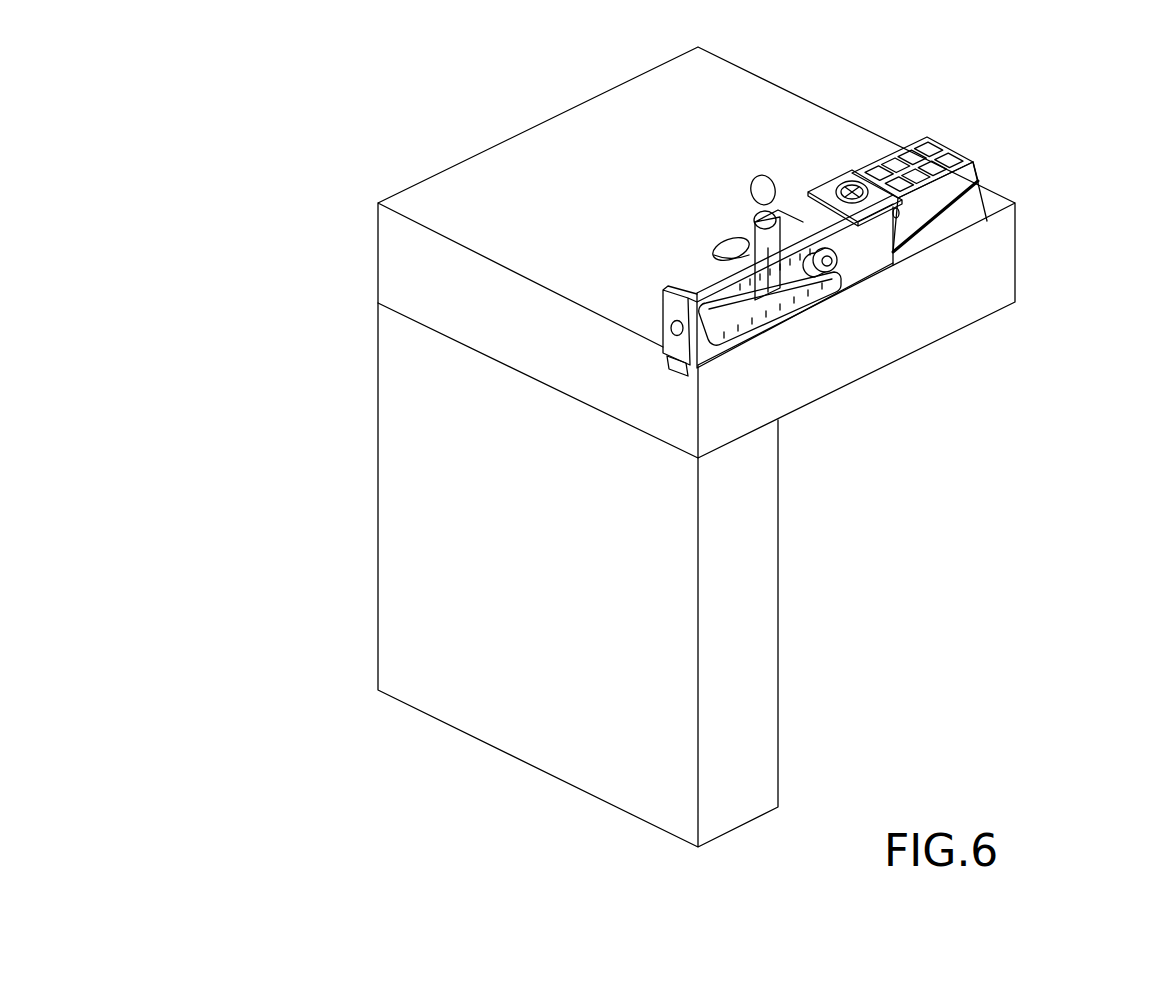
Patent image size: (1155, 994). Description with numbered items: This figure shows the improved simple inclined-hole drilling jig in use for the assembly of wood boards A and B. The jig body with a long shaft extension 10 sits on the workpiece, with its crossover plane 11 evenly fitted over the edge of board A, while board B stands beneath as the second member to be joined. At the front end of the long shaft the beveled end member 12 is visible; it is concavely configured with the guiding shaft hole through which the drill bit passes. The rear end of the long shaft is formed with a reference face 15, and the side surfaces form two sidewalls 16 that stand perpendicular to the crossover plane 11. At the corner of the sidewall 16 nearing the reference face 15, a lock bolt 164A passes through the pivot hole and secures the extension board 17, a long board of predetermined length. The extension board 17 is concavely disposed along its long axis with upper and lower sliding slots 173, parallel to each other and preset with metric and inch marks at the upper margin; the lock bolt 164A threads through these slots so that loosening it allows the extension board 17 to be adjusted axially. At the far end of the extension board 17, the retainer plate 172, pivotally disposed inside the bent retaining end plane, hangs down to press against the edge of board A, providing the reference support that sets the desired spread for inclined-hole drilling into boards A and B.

The jig body with a long shaft extension 10 is at (862, 148).
The beveled end member 12 is at (962, 158).
The sidewalls 16 is at (930, 197).
The crossover plane 11 is at (922, 252).
The extension board 17 is at (878, 257).
The reference face 15 is at (735, 232).
The lock bolt 164A is at (838, 272).
The sliding slot 173 is at (710, 313).
The retainer plate 172 is at (675, 367).
The wood board A is at (495, 322).
The wood board B is at (480, 660).